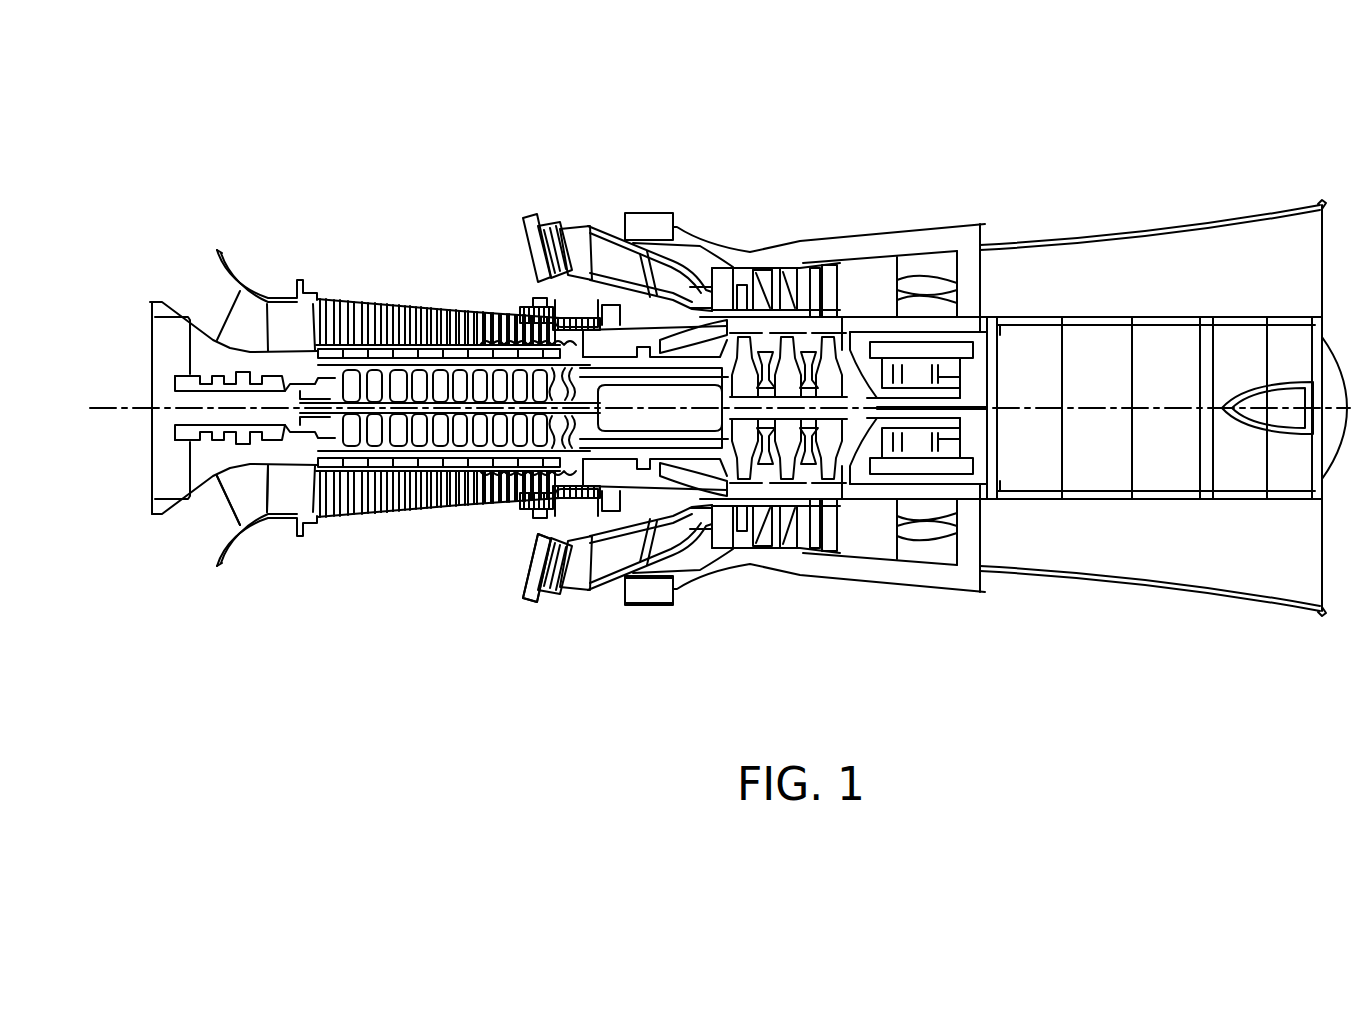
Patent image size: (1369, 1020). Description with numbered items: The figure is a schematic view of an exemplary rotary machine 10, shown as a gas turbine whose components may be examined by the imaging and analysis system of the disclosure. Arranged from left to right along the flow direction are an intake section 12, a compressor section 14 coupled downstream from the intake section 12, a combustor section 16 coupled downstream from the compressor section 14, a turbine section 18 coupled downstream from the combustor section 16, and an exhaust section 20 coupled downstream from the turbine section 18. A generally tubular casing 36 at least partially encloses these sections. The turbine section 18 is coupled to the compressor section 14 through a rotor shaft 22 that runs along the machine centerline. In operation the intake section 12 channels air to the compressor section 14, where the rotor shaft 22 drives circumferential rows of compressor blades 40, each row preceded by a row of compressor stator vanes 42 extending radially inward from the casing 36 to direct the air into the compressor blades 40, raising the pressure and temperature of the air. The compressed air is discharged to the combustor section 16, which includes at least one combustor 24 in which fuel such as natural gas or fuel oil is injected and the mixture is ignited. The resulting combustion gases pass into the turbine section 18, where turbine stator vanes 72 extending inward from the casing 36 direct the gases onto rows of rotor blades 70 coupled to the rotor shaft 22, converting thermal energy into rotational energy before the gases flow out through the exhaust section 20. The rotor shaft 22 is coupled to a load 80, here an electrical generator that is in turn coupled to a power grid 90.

The rotary machine 10 is at (541, 146).
The intake section 12 is at (178, 247).
The compressor section 14 is at (399, 278).
The combustor section 16 is at (601, 157).
The turbine section 18 is at (831, 172).
The exhaust section 20 is at (1124, 183).
The rotor shaft 22 is at (910, 385).
The combustor 24 is at (610, 595).
The casing 36 is at (852, 250).
The compressor blades 40 is at (380, 497).
The compressor stator vanes 42 is at (362, 492).
The rotor blades 70 is at (804, 287).
The turbine stator vanes 72 is at (766, 287).
The load 80 is at (76, 424).
The power grid 90 is at (76, 324).